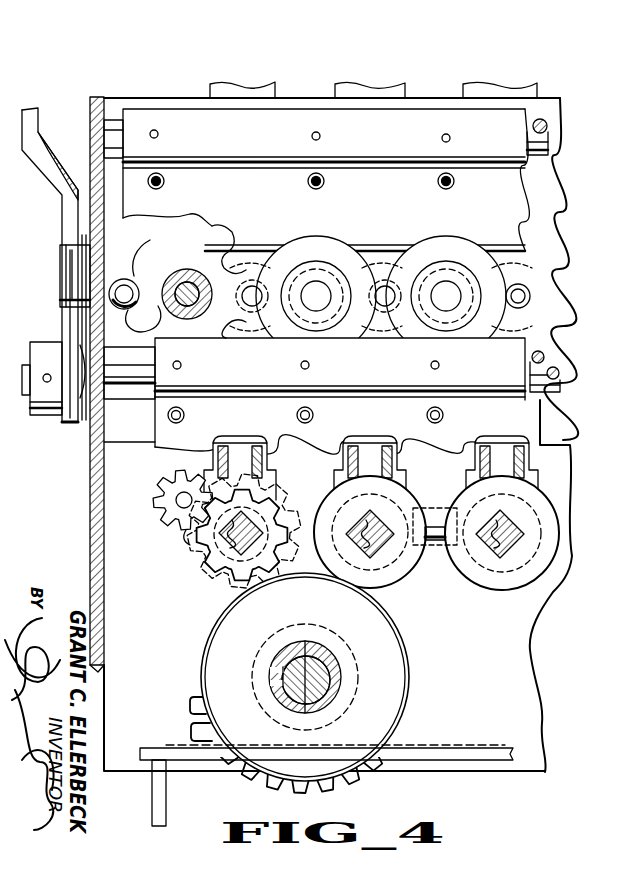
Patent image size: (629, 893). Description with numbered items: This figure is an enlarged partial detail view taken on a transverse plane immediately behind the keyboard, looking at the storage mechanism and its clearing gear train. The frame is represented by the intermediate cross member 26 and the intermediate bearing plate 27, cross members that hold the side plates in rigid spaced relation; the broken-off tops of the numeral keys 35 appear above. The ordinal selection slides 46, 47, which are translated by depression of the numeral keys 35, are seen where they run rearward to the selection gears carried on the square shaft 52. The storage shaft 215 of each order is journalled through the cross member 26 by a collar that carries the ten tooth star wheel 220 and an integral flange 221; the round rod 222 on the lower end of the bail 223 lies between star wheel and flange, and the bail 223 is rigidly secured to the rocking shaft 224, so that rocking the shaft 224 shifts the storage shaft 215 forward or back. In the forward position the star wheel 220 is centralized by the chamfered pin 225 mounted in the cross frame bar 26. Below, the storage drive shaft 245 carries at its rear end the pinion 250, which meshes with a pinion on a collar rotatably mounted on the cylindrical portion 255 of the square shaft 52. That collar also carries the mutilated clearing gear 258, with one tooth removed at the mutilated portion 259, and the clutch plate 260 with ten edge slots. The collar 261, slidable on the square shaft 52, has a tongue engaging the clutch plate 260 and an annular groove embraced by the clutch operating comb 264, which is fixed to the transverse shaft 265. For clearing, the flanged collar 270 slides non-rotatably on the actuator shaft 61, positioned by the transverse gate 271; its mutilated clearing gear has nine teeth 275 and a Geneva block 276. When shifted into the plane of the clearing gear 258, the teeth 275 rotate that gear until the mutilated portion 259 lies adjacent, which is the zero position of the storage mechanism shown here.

The intermediate cross member 26 is at (546, 323).
The intermediate bearing plate 27 is at (140, 707).
The numeral keys 35 is at (210, 88).
The ordinal selection slide 46 is at (220, 442).
The ordinal selection slide 47 is at (264, 442).
The square shaft 52 is at (262, 553).
The actuator shaft 61 is at (322, 672).
The storage shaft 215 is at (182, 288).
The star wheel 220 is at (188, 240).
The flange 221 is at (490, 283).
The round rod 222 is at (522, 253).
The bail 223 is at (510, 195).
The rocking shaft 224 is at (548, 128).
The chamfered pin 225 is at (124, 309).
The storage drive shaft 245 is at (178, 500).
The pinion 250 is at (175, 530).
The cylindrical portion 255 is at (215, 555).
The mutilated clearing gear 258 is at (190, 558).
The mutilated portion 259 is at (262, 580).
The clutch plate 260 is at (212, 590).
The collar 261 is at (414, 576).
The clutch operating comb 264 is at (525, 425).
The transverse shaft 265 is at (546, 366).
The flanged collar 270 is at (398, 738).
The transverse gate 271 is at (462, 753).
The teeth 275 is at (378, 776).
The Geneva block 276 is at (412, 718).